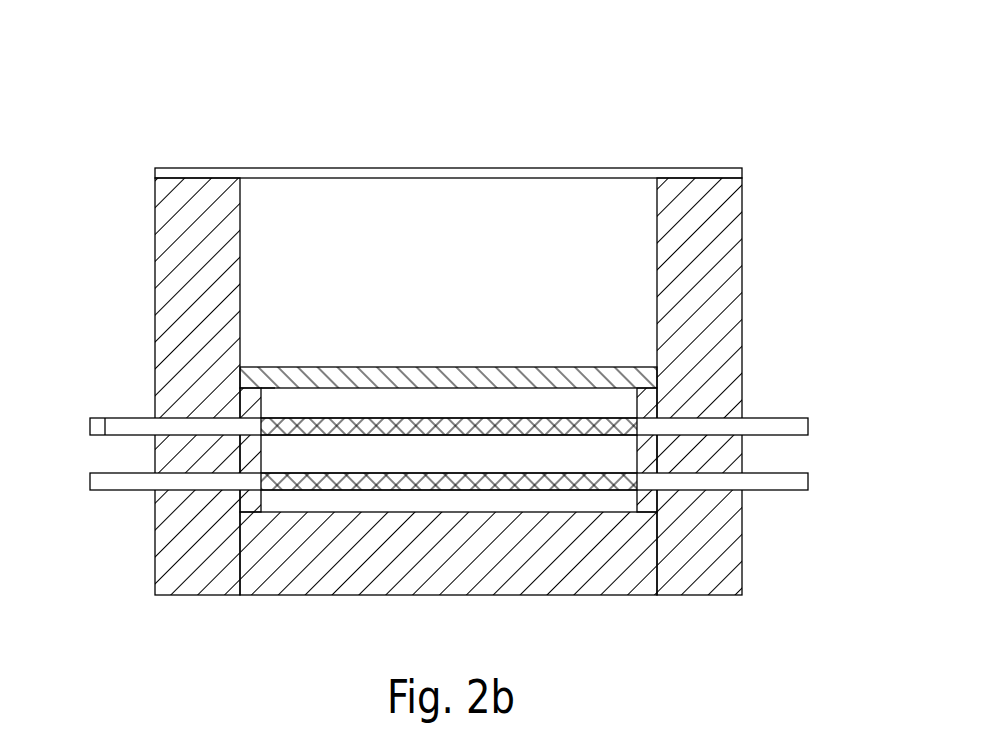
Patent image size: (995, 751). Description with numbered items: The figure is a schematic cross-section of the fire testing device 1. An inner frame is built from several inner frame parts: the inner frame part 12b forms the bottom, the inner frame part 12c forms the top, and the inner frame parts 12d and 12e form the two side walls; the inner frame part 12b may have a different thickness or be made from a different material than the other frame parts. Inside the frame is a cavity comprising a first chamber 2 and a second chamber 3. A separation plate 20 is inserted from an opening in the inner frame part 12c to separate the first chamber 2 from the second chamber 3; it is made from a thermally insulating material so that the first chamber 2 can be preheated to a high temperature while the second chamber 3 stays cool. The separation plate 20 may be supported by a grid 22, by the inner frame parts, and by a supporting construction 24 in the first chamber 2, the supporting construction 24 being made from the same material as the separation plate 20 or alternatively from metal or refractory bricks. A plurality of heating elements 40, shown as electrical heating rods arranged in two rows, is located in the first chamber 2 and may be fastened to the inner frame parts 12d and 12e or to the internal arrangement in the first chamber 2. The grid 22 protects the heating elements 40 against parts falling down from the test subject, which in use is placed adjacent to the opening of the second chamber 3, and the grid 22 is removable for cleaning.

The fire testing device 1 is at (447, 342).
The first chamber 2 is at (556, 374).
The second chamber 3 is at (448, 246).
The inner frame part 12b is at (401, 575).
The inner frame part 12c is at (448, 171).
The inner frame part 12d is at (754, 386).
The inner frame part 12e is at (141, 386).
The separation plate 20 is at (537, 339).
The grid 22 is at (176, 338).
The supporting construction 24 is at (447, 429).
The heating elements 40 is at (450, 489).